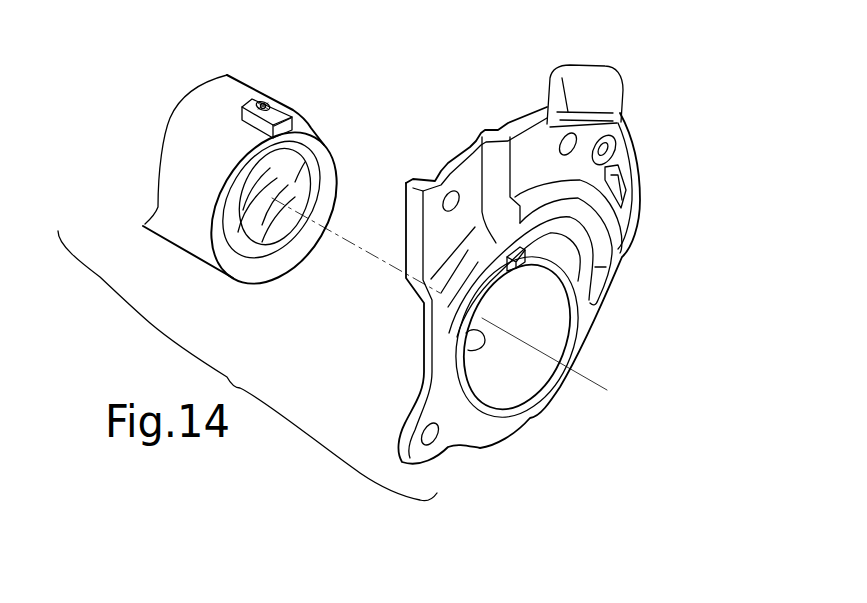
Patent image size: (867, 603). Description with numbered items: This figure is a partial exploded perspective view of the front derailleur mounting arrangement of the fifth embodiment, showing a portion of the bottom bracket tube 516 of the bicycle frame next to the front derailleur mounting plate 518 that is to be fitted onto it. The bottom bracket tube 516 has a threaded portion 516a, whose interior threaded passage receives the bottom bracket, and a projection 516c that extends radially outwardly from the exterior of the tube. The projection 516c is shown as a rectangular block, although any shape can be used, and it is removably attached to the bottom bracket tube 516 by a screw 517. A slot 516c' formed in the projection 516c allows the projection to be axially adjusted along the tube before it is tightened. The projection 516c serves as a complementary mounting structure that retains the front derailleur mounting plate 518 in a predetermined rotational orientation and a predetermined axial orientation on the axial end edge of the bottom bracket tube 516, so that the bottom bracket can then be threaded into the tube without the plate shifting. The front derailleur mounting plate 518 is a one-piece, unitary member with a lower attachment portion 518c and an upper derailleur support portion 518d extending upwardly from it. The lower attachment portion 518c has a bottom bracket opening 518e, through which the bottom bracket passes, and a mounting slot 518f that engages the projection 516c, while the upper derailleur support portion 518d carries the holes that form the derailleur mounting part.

The bottom bracket tube 516 is at (249, 82).
The threaded portion 516a is at (304, 180).
The projection 516c is at (174, 131).
The slot 516c' is at (355, 97).
The screw 517 is at (264, 102).
The front derailleur mounting plate 518 is at (640, 157).
The lower attachment portion 518c is at (573, 350).
The upper derailleur support portion 518d is at (516, 110).
The bottom bracket opening 518e is at (482, 336).
The mounting slot 518f is at (562, 313).